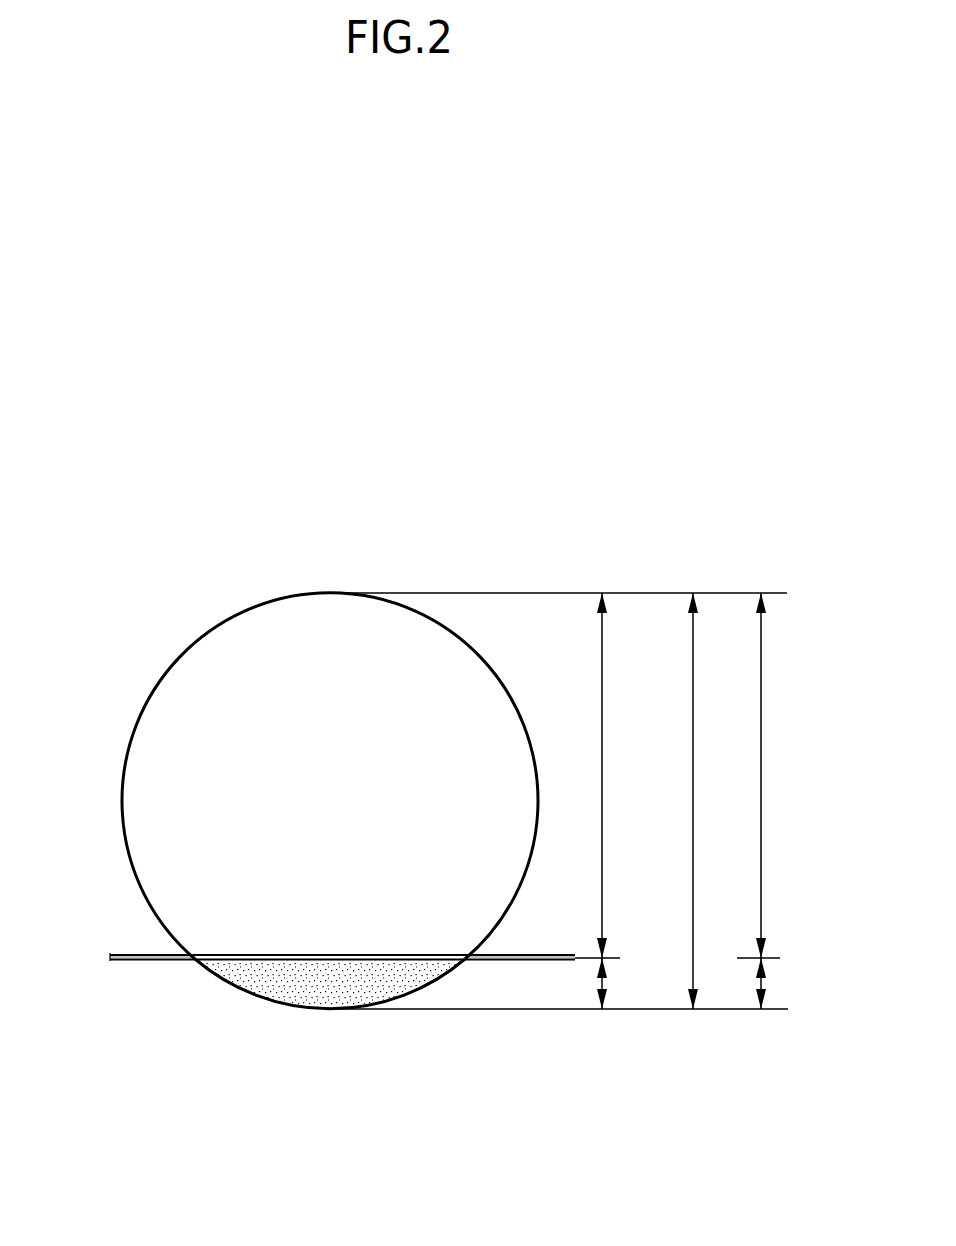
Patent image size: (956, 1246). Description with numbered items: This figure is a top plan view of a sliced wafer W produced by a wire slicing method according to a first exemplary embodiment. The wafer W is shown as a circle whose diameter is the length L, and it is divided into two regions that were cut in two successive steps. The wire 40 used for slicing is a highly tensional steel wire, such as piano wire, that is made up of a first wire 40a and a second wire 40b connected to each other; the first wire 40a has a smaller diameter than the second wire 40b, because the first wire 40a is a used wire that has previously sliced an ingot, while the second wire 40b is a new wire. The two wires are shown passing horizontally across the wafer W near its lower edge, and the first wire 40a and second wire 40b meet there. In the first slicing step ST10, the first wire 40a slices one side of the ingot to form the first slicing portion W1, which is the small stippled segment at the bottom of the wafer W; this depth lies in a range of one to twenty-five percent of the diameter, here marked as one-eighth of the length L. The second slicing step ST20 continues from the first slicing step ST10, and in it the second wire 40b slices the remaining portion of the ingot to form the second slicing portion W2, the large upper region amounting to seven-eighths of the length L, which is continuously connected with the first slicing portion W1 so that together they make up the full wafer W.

The wafer W is at (426, 542).
The first slicing portion W1 is at (327, 995).
The second slicing portion W2 is at (175, 697).
The wire 40 is at (350, 1012).
The first wire 40a is at (148, 962).
The second wire 40b is at (518, 962).
The length L is at (627, 793).
The second slicing step ST20 is at (793, 775).
The first slicing step ST10 is at (795, 983).